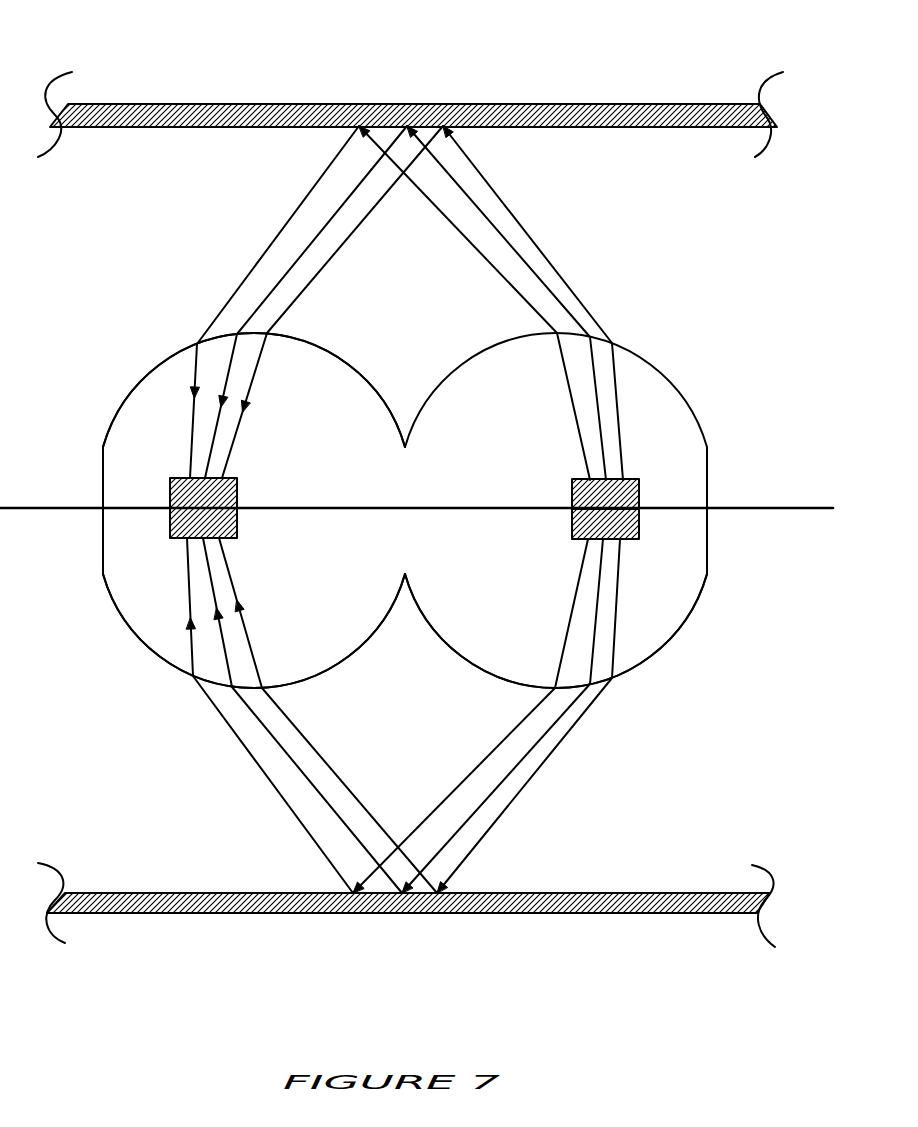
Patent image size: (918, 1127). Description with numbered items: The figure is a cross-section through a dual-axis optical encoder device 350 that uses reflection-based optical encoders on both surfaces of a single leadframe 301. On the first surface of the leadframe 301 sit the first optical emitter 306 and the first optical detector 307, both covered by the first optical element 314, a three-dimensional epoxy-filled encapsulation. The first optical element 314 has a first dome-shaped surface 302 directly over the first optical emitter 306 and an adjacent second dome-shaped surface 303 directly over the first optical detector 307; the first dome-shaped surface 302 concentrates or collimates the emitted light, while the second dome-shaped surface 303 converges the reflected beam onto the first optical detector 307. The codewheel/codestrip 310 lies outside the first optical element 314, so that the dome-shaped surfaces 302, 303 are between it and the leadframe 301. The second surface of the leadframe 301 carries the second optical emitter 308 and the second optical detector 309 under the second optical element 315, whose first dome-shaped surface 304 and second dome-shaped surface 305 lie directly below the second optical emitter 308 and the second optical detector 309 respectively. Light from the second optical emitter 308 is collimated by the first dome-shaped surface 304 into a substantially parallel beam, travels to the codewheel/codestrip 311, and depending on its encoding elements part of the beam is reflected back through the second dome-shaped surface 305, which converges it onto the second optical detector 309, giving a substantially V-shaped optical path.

The leadframe 301 is at (803, 508).
The first dome-shaped surface 302 is at (685, 392).
The second dome-shaped surface 303 is at (172, 352).
The first dome-shaped surface 304 is at (683, 628).
The second dome-shaped surface 305 is at (153, 655).
The first optical emitter 306 is at (640, 498).
The first optical detector 307 is at (237, 495).
The second optical emitter 308 is at (572, 522).
The second optical detector 309 is at (237, 527).
The codewheel/codestrip 310 is at (598, 108).
The codewheel/codestrip 311 is at (600, 902).
The first optical element 314 is at (678, 438).
The second optical element 315 is at (178, 568).
The dual-axis optical encoder device 350 is at (722, 233).